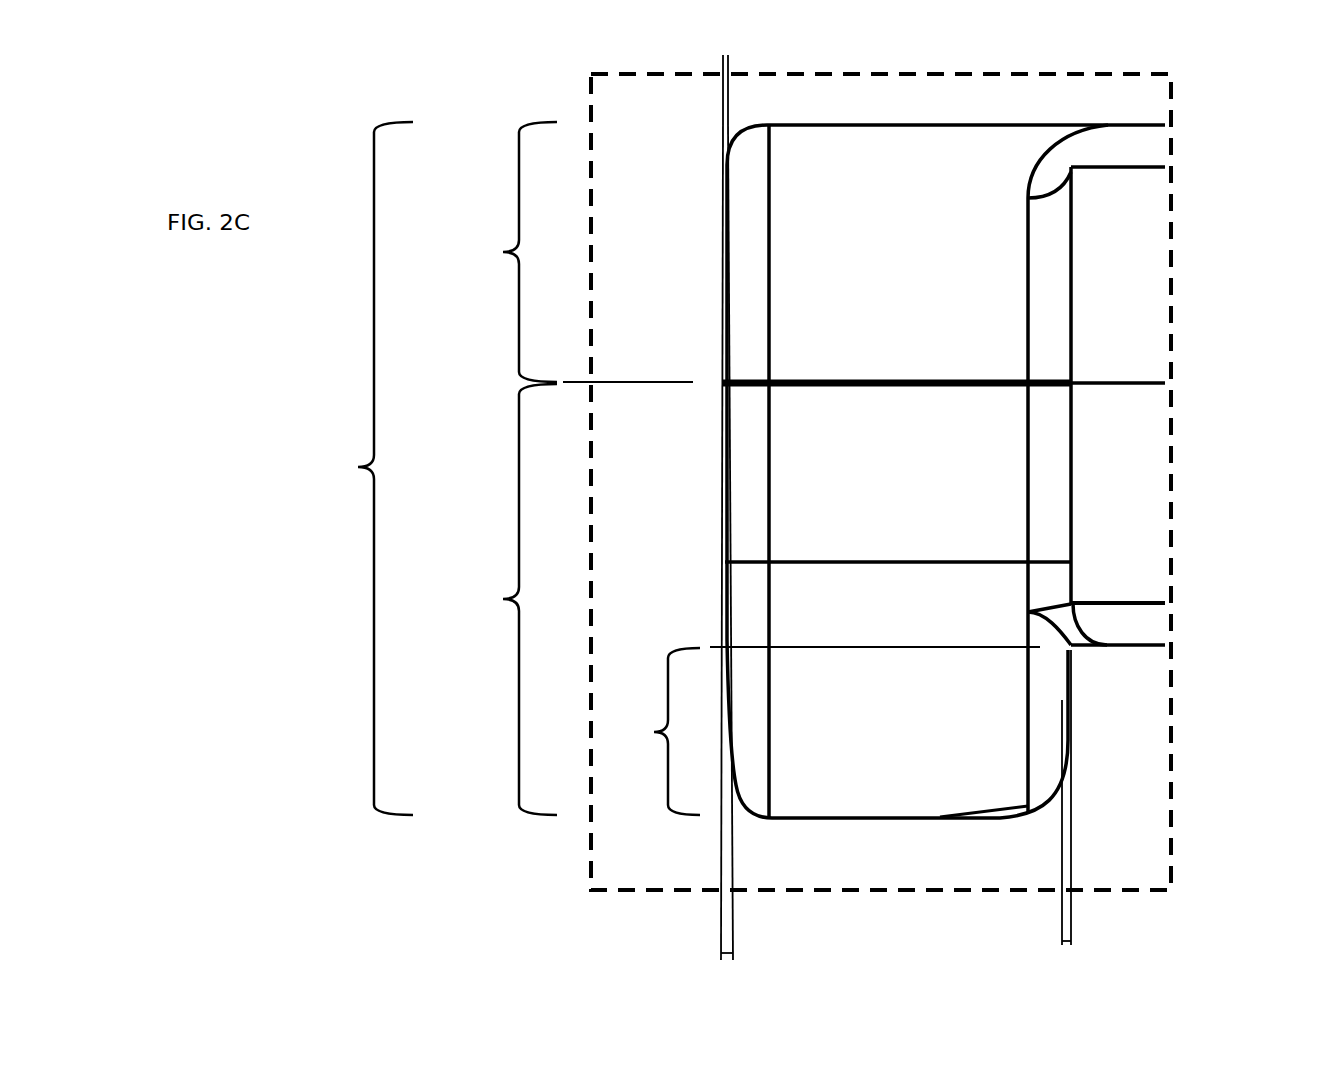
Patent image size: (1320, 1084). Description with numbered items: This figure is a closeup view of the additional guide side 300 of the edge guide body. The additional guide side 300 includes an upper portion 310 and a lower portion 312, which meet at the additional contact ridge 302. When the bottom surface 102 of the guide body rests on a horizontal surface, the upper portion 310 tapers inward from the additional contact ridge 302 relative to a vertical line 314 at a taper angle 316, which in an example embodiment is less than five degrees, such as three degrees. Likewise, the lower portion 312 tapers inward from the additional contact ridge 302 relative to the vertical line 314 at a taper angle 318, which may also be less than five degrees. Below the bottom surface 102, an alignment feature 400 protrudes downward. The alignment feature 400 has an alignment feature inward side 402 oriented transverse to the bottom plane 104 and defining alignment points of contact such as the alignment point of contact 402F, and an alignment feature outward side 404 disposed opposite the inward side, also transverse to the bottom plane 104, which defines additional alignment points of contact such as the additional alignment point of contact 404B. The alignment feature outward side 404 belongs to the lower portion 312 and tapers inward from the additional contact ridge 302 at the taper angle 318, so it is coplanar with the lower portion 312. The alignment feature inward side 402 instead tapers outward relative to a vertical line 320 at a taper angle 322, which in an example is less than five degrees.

The additional guide side 300 is at (357, 467).
The upper portion of the additional guide side 310 is at (503, 252).
The lower portion of the additional guide side 312 is at (500, 599).
The additional contact ridge 302 is at (719, 383).
The vertical line 314 is at (718, 91).
The taper angle 316 is at (728, 66).
The taper angle 318 is at (729, 946).
The vertical line 320 is at (1073, 917).
The taper angle 322 is at (1063, 940).
The bottom surface 102 is at (1148, 645).
The bottom plane 104 is at (873, 646).
The alignment feature 400 is at (912, 797).
The alignment feature inward side 402 is at (1060, 744).
The alignment point of contact 402F is at (1075, 662).
The alignment feature outward side 404 is at (654, 732).
The additional alignment point of contact 404B is at (737, 665).